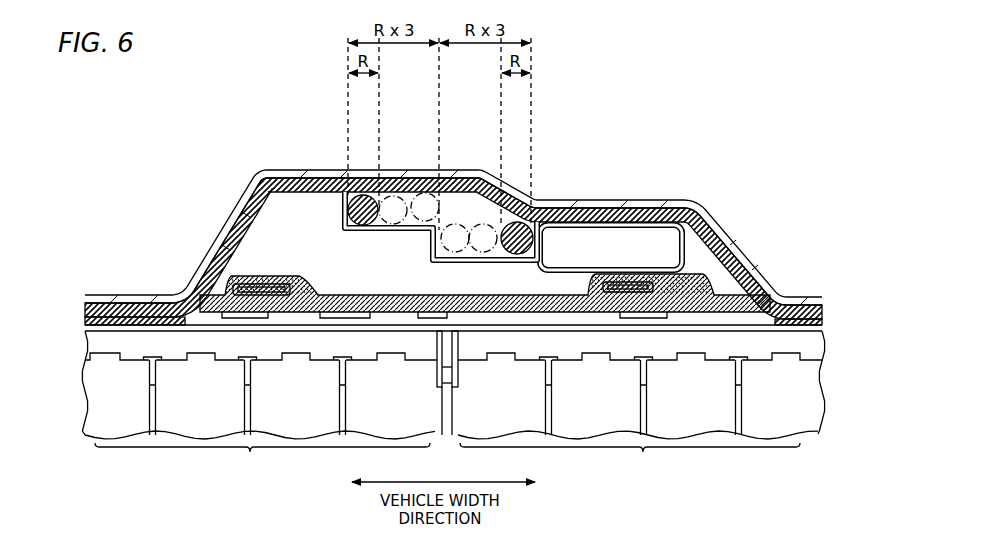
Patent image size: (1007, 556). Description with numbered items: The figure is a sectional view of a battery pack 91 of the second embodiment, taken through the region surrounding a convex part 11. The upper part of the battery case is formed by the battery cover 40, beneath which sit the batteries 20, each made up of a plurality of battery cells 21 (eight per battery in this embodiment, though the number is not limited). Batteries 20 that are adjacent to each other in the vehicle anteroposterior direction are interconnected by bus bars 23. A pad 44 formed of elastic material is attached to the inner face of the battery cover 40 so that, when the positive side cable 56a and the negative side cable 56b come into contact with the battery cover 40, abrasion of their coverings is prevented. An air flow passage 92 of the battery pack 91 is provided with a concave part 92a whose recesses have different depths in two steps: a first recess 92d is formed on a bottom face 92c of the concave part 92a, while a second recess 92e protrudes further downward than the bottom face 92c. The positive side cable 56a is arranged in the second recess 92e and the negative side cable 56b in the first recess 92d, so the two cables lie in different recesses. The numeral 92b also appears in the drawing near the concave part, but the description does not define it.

The convex part 11 is at (728, 218).
The battery 20 is at (453, 407).
The battery cell 21 is at (791, 413).
The bus bar 23 is at (248, 283).
The battery cover 40 is at (664, 200).
The pad 44 is at (232, 222).
The positive side cable 56a is at (533, 202).
The negative side cable 56b is at (352, 196).
The battery pack 91 is at (591, 82).
The air flow passage 92 is at (592, 212).
The concave part 92a is at (457, 203).
The sheet member portion 92b is at (290, 198).
The bottom face 92c is at (388, 218).
The first recess 92d is at (397, 203).
The second recess 92e is at (483, 242).